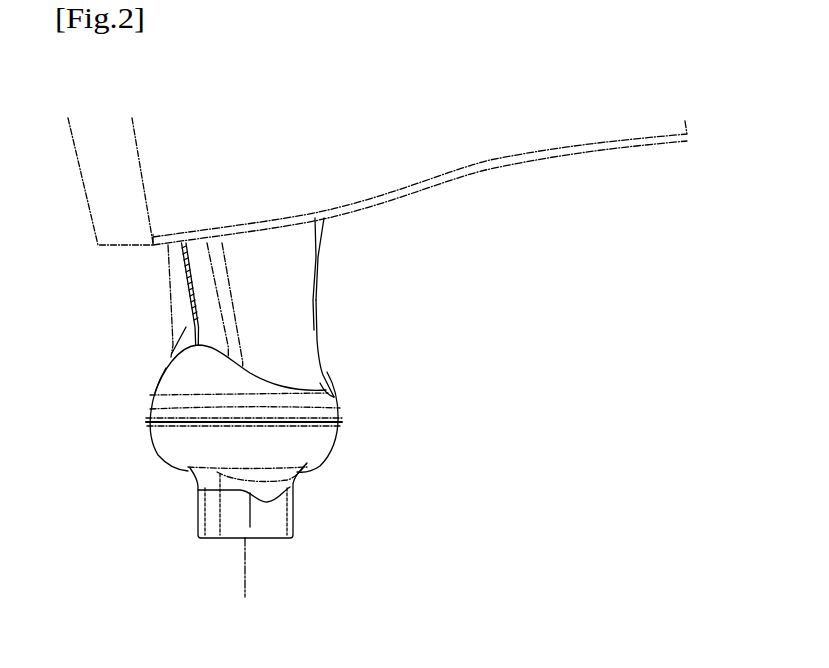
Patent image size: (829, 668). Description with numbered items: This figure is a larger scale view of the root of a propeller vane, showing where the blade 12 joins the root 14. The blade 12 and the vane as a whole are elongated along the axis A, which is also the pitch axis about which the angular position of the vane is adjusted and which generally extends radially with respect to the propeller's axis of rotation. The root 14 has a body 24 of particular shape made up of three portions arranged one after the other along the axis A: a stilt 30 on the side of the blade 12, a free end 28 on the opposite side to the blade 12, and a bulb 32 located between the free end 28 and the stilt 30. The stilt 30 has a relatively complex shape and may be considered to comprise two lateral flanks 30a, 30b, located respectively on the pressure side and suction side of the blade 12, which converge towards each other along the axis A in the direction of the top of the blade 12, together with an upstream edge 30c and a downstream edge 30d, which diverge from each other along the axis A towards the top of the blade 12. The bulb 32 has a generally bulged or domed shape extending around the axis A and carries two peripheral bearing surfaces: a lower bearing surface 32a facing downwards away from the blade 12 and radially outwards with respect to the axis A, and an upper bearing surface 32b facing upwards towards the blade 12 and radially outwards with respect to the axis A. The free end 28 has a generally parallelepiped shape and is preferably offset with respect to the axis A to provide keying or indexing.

The blade 12 is at (488, 171).
The root 14 is at (302, 410).
The body 24 is at (325, 352).
The free end 28 is at (293, 527).
The stilt 30 is at (185, 312).
The lateral flank 30a is at (303, 302).
The lateral flank 30b is at (170, 293).
The upstream edge 30c is at (172, 353).
The downstream edge 30d is at (313, 320).
The bulb 32 is at (329, 442).
The lower bearing surface 32a is at (185, 440).
The upper bearing surface 32b is at (160, 393).
The axis A is at (248, 570).